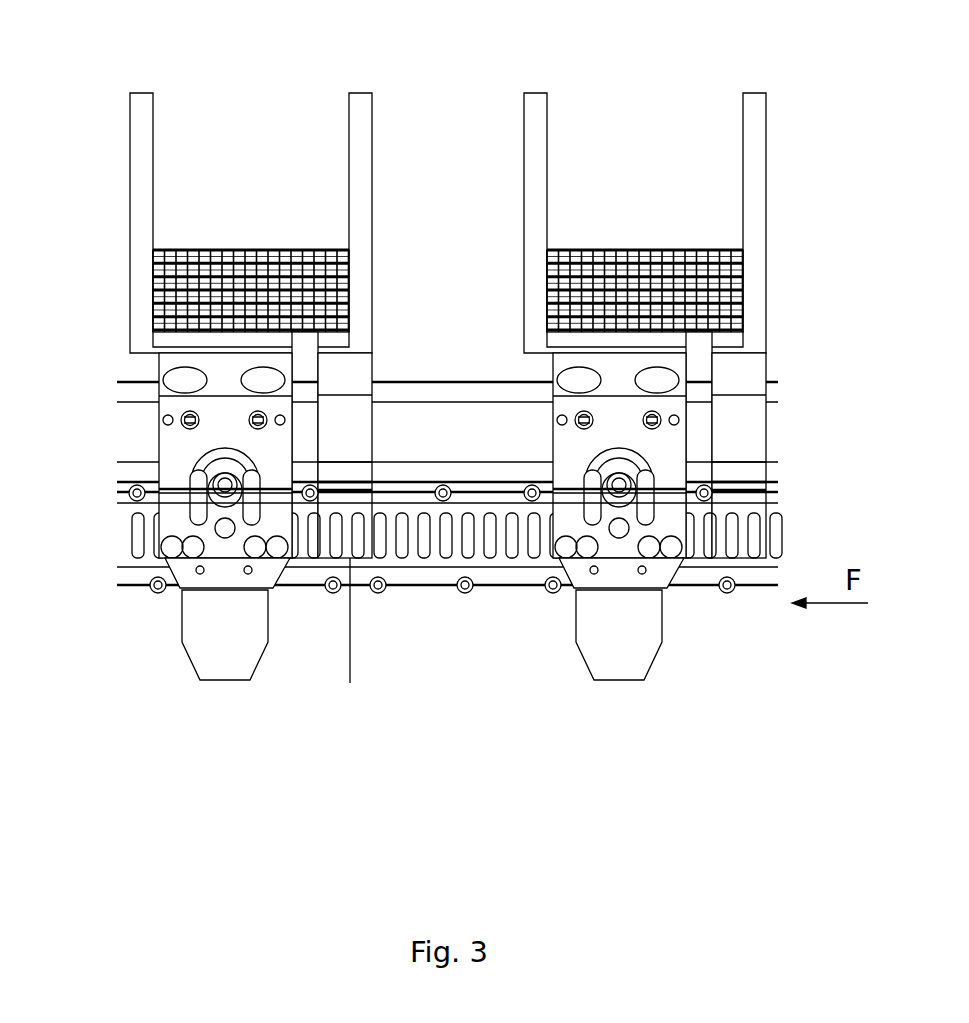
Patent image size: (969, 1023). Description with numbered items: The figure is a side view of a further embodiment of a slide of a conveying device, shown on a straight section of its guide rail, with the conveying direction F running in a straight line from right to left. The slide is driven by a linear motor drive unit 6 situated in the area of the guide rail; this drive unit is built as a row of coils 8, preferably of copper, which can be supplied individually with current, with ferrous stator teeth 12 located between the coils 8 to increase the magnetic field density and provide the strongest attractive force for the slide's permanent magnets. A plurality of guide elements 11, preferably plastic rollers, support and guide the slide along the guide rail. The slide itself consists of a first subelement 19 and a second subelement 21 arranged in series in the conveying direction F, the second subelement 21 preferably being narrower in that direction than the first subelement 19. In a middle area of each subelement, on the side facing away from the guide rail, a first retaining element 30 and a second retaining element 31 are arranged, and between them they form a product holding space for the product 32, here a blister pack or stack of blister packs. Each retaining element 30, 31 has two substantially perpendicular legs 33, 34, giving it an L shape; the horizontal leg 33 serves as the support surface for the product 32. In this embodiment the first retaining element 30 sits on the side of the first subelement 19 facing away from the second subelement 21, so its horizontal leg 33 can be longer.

The linear motor drive unit 6 is at (137, 570).
The coils 8 is at (123, 503).
The guide elements 11 is at (698, 363).
The stator teeth 12 is at (135, 540).
The first subelement 19 is at (173, 445).
The second subelement 21 is at (343, 443).
The first retaining element 30 is at (145, 233).
The second retaining element 31 is at (755, 192).
The product 32 is at (647, 250).
The leg 33 is at (207, 347).
The leg 34 is at (145, 292).